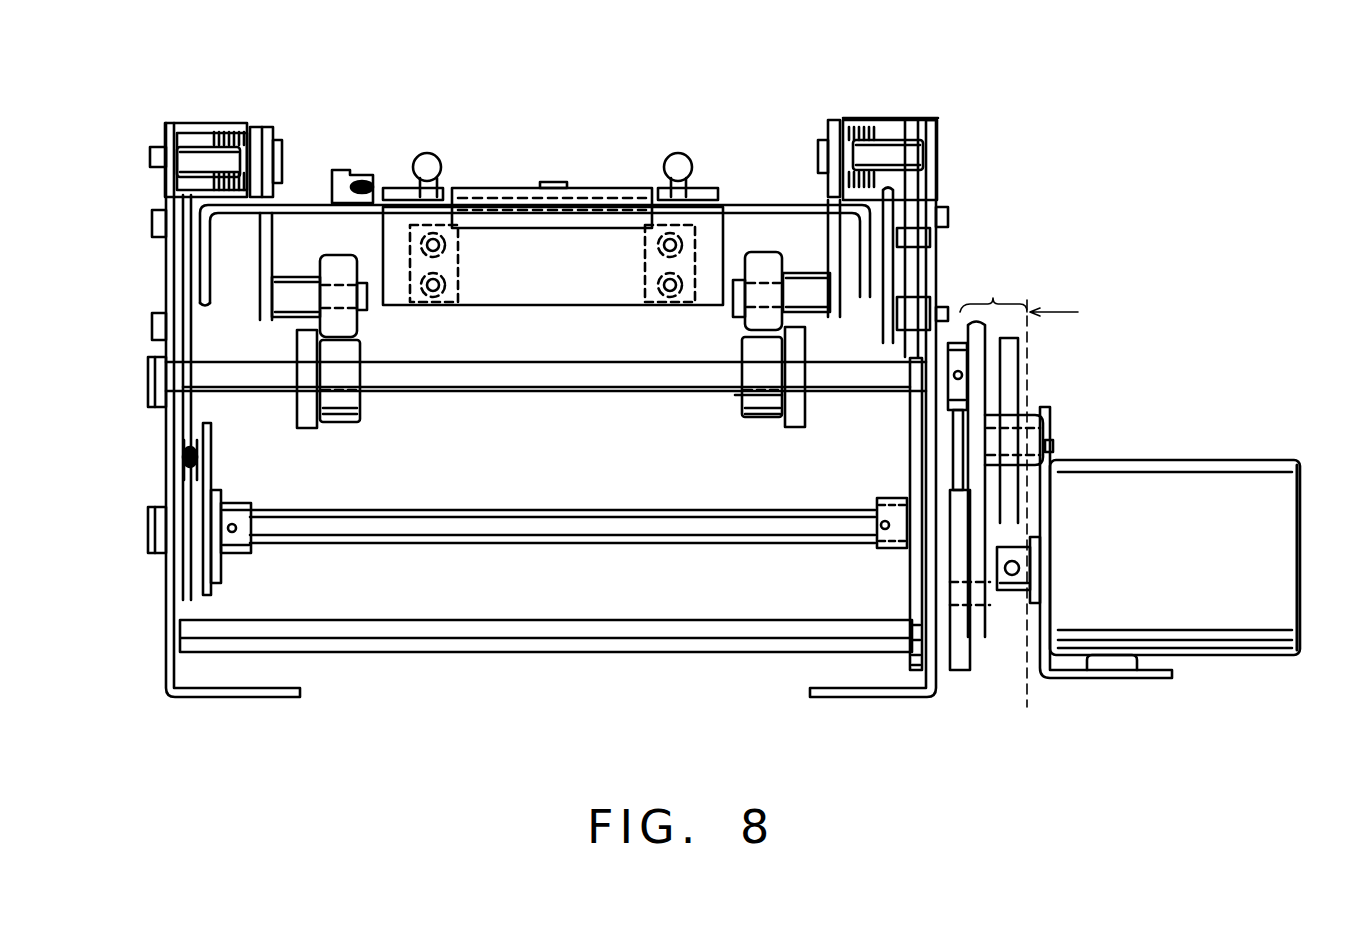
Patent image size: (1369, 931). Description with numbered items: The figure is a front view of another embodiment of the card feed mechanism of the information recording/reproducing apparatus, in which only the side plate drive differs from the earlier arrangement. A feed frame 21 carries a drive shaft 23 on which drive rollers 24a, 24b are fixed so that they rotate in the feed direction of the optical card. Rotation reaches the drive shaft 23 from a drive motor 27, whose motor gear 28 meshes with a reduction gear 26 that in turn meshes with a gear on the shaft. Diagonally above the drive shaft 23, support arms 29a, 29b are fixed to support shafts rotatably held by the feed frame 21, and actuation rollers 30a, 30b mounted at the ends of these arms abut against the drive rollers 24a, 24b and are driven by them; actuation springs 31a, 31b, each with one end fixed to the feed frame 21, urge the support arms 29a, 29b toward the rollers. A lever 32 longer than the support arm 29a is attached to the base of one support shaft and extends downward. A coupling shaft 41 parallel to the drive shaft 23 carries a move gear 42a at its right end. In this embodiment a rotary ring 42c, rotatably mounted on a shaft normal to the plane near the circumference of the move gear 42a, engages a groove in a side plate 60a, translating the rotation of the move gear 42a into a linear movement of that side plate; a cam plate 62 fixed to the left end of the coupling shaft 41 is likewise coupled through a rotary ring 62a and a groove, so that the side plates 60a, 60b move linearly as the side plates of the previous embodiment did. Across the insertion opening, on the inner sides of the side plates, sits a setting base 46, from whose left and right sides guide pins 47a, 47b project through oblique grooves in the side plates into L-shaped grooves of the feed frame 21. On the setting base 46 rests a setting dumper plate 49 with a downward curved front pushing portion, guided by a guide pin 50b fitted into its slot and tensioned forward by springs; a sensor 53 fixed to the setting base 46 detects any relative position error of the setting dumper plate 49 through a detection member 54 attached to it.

The feed frame 21 is at (940, 122).
The drive shaft 23 is at (525, 373).
The drive roller 24a is at (752, 420).
The drive roller 24b is at (355, 410).
The reduction gear 26 is at (1014, 489).
The drive motor 27 is at (1177, 467).
The motor gear 28 is at (1017, 590).
The support arm 29a is at (833, 120).
The support arm 29b is at (263, 127).
The actuation roller 30a is at (767, 257).
The actuation roller 30b is at (343, 320).
The actuation spring 31a is at (870, 122).
The actuation spring 31b is at (262, 125).
The lever 32 is at (917, 270).
The coupling shaft 41 is at (553, 517).
The move gear 42a is at (917, 672).
The rotary ring 42c is at (883, 453).
The setting base 46 is at (743, 202).
The guide pin 47a is at (913, 232).
The guide pin 47b is at (180, 235).
The setting dumper plate 49 is at (710, 300).
The guide pin 50b is at (555, 180).
The sensor 53 is at (357, 168).
The detection member 54 is at (378, 190).
The side plate 60a is at (888, 342).
The side plate 60b is at (180, 345).
The cam plate 62 is at (193, 577).
The rotary ring 62a is at (183, 457).